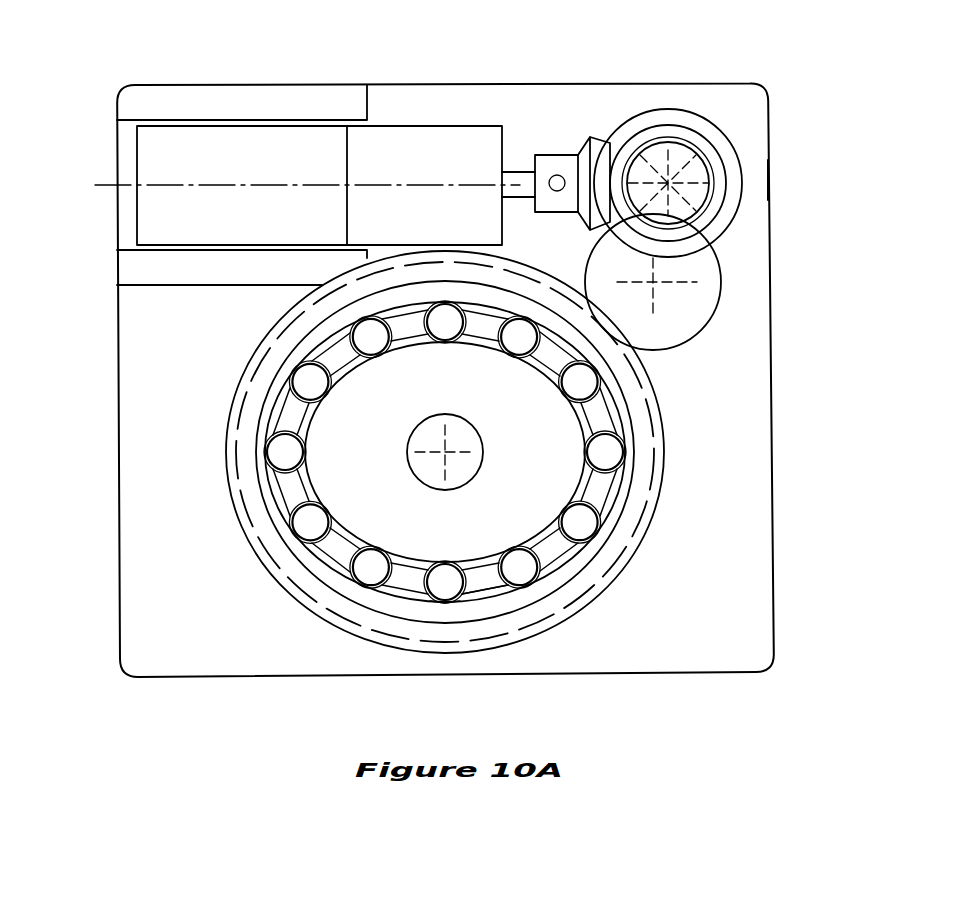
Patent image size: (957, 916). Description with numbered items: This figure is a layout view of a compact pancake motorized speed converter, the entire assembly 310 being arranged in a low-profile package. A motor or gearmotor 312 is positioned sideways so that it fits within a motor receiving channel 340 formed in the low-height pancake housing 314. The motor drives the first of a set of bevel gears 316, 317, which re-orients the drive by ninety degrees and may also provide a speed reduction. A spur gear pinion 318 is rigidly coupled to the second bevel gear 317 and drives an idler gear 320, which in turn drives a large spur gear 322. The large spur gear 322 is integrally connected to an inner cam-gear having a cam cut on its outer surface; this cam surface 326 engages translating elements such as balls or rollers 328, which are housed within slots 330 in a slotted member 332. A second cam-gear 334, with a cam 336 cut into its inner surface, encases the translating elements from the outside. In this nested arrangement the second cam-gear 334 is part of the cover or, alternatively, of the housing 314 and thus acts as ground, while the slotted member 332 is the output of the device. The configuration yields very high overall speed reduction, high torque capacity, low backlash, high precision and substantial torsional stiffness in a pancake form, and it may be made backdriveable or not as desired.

The assembly 310 is at (168, 66).
The motor or gearmotor 312 is at (292, 142).
The pancake housing 314 is at (505, 85).
The first bevel gear 316 is at (589, 142).
The second bevel gear 317 is at (758, 181).
The spur gear pinion 318 is at (696, 142).
The idler gear 320 is at (707, 290).
The large spur gear 322 is at (662, 412).
The cam surface 326 is at (557, 545).
The balls or rollers 328 is at (283, 453).
The slots 330 is at (432, 601).
The slotted member 332 is at (483, 601).
The second cam-gear 334 is at (606, 508).
The cam 336 is at (512, 603).
The motor receiving channel 340 is at (106, 141).